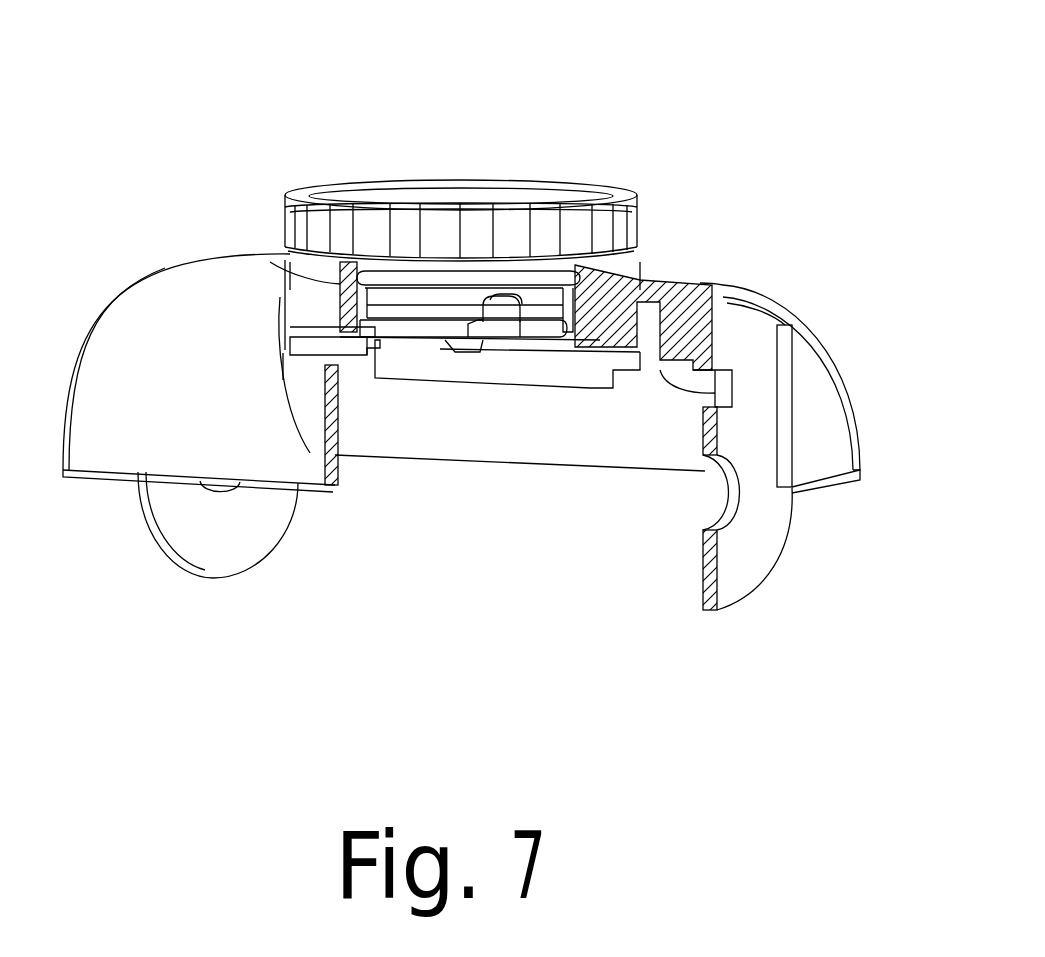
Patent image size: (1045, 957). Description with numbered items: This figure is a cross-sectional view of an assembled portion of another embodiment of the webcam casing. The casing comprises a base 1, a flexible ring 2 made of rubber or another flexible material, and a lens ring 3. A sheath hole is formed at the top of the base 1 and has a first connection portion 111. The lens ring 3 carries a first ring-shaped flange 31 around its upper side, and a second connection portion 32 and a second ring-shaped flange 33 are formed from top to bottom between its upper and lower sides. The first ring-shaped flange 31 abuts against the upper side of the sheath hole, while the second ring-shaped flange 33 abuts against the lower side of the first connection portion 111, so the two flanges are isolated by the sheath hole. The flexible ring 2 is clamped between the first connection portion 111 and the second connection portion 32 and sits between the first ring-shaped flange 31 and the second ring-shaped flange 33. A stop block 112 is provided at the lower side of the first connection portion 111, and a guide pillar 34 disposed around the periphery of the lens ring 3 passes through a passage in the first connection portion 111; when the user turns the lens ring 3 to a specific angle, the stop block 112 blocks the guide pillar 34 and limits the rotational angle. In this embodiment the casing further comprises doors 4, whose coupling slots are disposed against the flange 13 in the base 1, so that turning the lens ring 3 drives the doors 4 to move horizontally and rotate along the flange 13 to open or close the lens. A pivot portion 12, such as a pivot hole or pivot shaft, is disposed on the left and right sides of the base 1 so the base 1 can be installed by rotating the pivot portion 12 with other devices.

The base 1 is at (766, 285).
The first connection portion 111 is at (292, 285).
The stop block 112 is at (640, 280).
The pivot portion 12 is at (742, 527).
The flange 13 is at (720, 395).
The flexible ring 2 is at (410, 278).
The lens ring 3 is at (458, 163).
The first ring-shaped flange 31 is at (640, 210).
The second connection portion 32 is at (383, 288).
The second ring-shaped flange 33 is at (430, 317).
The guide pillar 34 is at (507, 313).
The door 4 is at (583, 383).